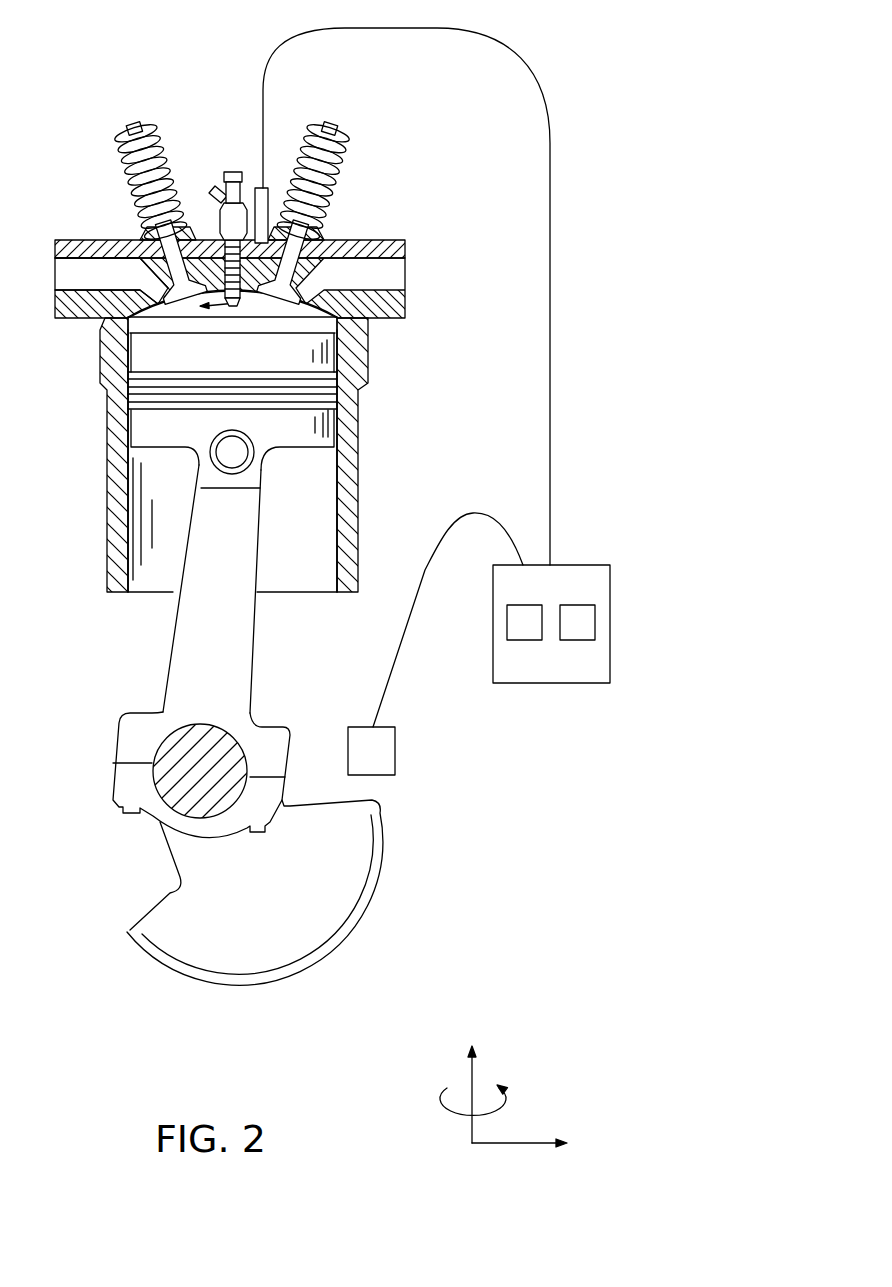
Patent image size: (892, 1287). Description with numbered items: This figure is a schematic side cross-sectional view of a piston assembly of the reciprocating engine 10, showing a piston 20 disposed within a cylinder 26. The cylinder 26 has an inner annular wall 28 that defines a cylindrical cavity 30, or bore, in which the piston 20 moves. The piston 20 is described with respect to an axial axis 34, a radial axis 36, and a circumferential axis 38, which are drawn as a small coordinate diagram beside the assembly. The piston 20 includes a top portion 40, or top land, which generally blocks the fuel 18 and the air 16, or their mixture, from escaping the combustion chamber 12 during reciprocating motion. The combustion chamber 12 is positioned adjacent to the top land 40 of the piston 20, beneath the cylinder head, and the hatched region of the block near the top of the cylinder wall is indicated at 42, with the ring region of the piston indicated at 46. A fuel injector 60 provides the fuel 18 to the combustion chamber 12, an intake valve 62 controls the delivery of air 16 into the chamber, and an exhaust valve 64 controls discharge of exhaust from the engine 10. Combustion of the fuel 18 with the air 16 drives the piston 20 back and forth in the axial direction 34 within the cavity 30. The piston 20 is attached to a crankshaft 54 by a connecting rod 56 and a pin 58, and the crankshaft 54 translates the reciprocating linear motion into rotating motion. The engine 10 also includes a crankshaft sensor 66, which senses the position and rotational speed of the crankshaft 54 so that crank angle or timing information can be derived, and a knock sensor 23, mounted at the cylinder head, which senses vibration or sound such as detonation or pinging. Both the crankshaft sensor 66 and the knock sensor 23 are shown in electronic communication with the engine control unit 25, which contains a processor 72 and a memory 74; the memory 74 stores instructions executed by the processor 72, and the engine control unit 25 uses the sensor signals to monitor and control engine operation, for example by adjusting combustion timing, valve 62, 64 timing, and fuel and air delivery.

The engine 10 is at (445, 149).
The combustion chamber 12 is at (272, 304).
The oxidant 16 is at (161, 282).
The fuel 18 is at (232, 173).
The piston 20 is at (307, 440).
The knock sensor 23 is at (272, 190).
The engine control unit 25 is at (580, 564).
The cylinder 26 is at (106, 478).
The inner annular wall 28 is at (133, 520).
The cylindrical cavity 30 is at (152, 585).
The axial axis 34 is at (468, 1078).
The radial axis 36 is at (516, 1144).
The circumferential axis 38 is at (500, 1108).
The top portion 40 is at (318, 418).
The cylinder block 42 is at (125, 372).
The piston rings 46 is at (290, 362).
The crankshaft 54 is at (176, 916).
The connecting rod 56 is at (238, 692).
The pin 58 is at (238, 455).
The fuel injector 60 is at (247, 184).
The intake valve 62 is at (136, 130).
The exhaust valve 64 is at (334, 130).
The crankshaft sensor 66 is at (396, 753).
The processor 72 is at (525, 641).
The memory 74 is at (578, 641).